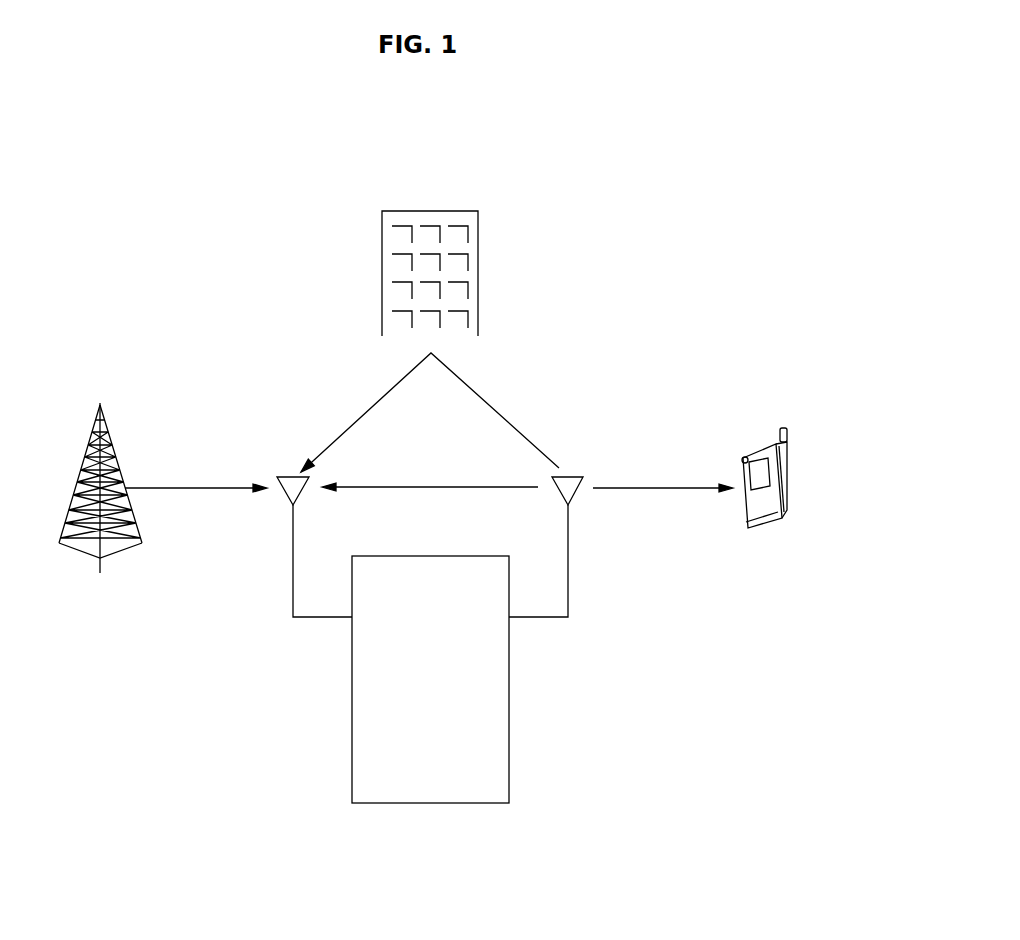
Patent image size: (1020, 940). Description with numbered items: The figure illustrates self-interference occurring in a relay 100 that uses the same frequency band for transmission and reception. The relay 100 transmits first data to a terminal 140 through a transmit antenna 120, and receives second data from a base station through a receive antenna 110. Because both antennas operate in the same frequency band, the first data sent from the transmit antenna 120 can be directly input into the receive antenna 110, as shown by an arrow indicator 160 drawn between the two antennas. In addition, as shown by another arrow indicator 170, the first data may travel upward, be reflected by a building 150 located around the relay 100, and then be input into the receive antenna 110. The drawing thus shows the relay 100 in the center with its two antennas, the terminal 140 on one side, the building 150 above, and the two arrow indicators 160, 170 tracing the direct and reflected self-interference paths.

The relay 100 is at (430, 803).
The receive antenna 110 is at (308, 617).
The transmit antenna 120 is at (550, 617).
The terminal 140 is at (762, 530).
The building 150 is at (430, 211).
The arrow indicator 160 is at (440, 487).
The arrow indicator 170 is at (493, 408).